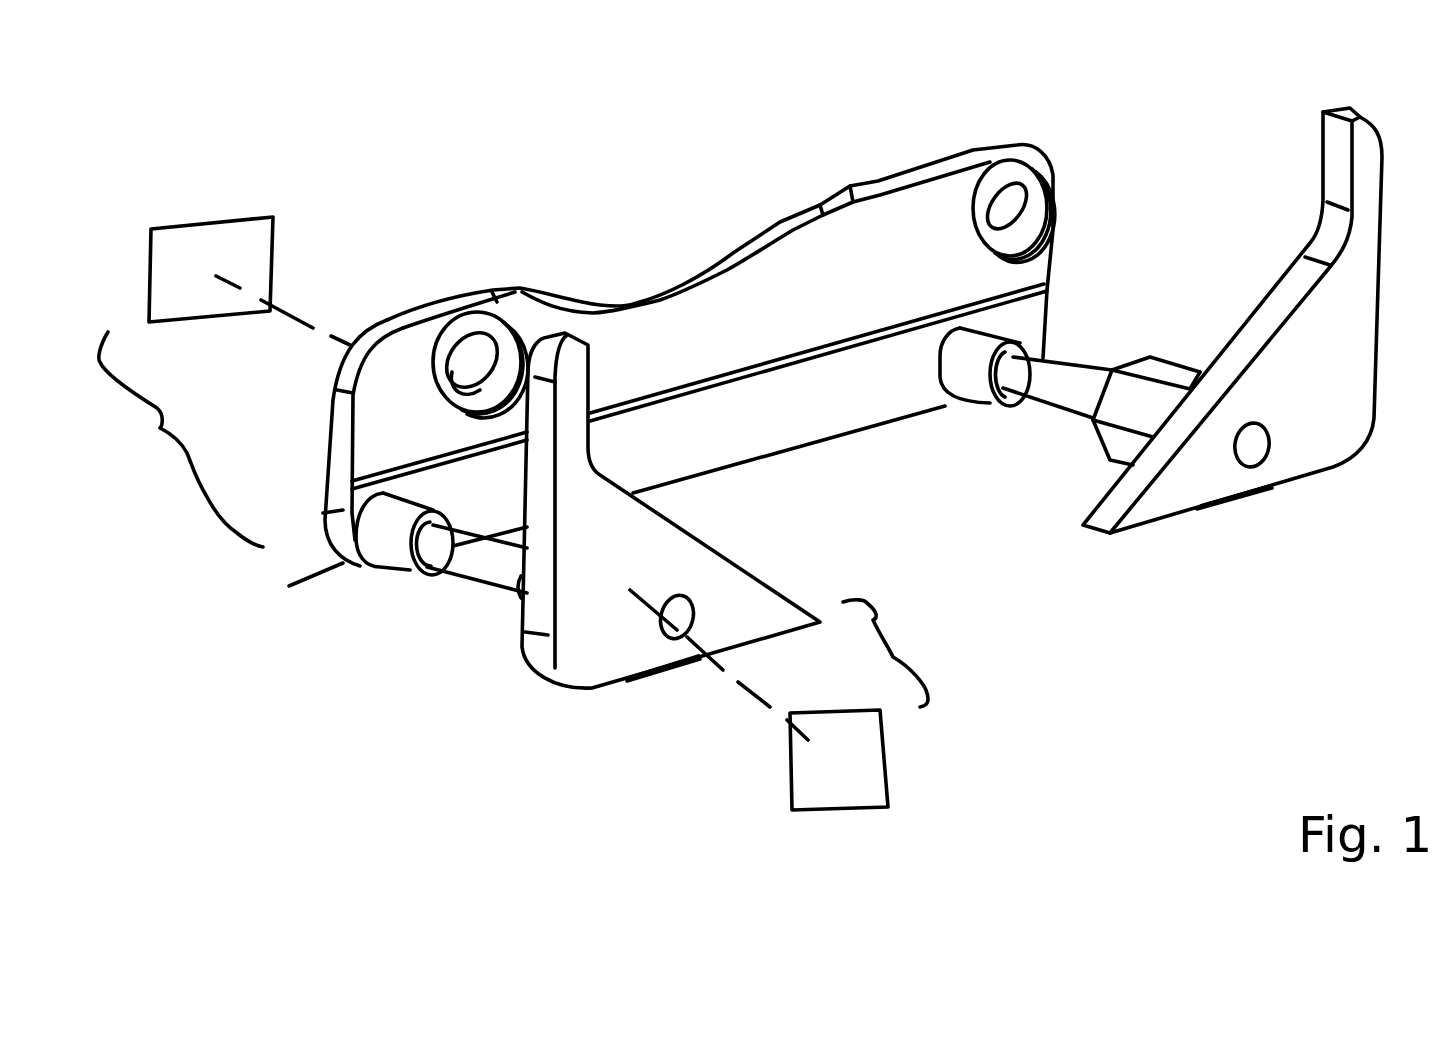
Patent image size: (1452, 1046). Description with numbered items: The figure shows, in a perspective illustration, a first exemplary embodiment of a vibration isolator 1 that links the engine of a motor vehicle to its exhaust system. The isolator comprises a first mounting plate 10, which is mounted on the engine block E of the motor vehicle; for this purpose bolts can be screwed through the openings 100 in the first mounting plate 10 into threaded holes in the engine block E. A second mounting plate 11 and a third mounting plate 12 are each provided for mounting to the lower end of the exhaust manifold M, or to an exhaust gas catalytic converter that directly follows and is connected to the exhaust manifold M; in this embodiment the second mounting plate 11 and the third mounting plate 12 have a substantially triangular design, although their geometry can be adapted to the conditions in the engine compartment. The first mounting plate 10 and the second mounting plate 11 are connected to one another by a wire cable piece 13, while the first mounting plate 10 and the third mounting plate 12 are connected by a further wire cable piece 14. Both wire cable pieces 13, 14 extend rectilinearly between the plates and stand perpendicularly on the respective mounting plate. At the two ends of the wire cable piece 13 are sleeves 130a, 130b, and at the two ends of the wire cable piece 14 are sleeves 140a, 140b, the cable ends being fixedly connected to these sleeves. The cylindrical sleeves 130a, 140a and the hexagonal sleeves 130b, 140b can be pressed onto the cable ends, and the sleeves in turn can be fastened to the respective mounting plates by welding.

The vibration isolator 1 is at (470, 201).
The first mounting plate 10 is at (737, 367).
The openings 100 is at (470, 355).
The second mounting plate 11 is at (1337, 425).
The third mounting plate 12 is at (580, 657).
The wire cable piece 13 is at (1105, 318).
The cylindrical sleeve 130a is at (972, 385).
The hexagonal sleeve 130b is at (1125, 407).
The further wire cable piece 14 is at (425, 610).
The cylindrical sleeve 140a is at (380, 525).
The hexagonal sleeve 140b is at (517, 592).
The engine block E is at (191, 245).
The exhaust manifold M is at (779, 700).